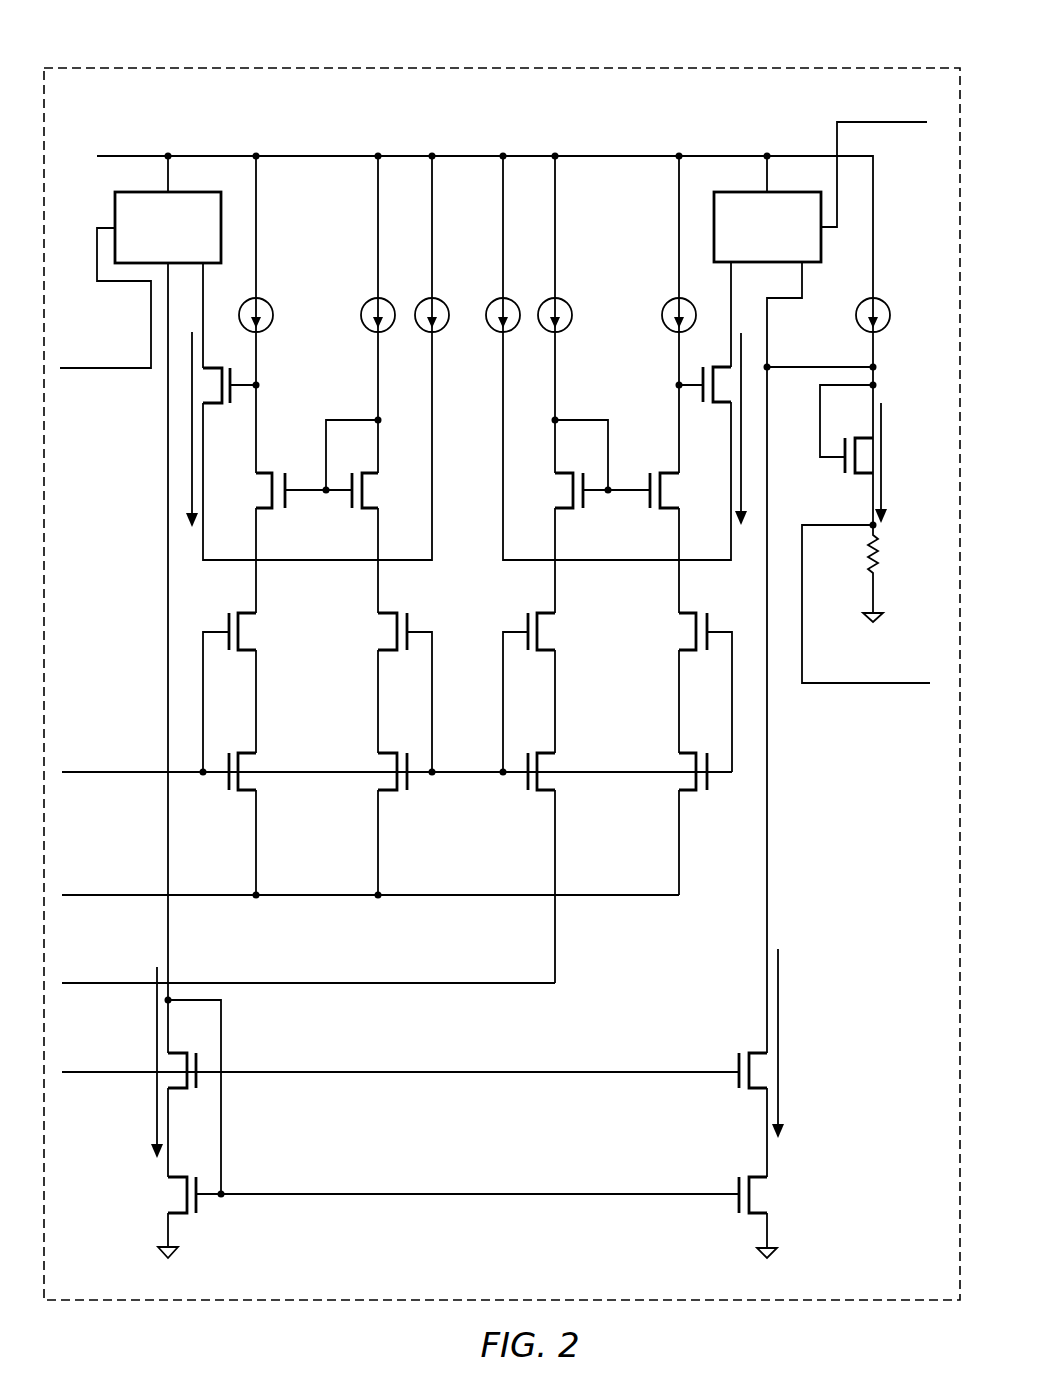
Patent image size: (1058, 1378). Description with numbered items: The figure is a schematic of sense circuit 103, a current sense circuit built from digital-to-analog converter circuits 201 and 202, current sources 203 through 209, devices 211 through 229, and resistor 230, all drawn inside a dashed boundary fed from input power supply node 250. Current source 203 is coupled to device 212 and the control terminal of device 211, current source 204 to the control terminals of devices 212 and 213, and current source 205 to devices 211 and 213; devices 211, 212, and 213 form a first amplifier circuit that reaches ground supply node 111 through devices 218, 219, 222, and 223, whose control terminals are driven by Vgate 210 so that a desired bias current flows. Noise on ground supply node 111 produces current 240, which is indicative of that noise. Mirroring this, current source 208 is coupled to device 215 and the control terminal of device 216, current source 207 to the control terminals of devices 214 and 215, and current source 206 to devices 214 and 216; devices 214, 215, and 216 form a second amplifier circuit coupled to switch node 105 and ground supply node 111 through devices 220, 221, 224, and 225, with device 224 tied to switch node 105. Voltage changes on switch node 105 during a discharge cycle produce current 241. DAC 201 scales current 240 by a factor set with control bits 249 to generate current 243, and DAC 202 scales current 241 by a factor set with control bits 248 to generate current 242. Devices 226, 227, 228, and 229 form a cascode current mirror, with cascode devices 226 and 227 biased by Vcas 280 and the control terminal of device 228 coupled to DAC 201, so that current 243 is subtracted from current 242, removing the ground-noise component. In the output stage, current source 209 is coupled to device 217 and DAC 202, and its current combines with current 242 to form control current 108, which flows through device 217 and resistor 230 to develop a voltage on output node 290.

The sense circuit 103 is at (290, 68).
The digital-to-analog converter circuit 201 is at (150, 248).
The digital-to-analog converter circuit 202 is at (749, 250).
The current source 203 is at (267, 302).
The current source 204 is at (367, 302).
The current source 205 is at (443, 302).
The current source 206 is at (487, 329).
The current source 207 is at (566, 302).
The current source 208 is at (666, 302).
The current source 209 is at (883, 302).
The device 211 is at (228, 405).
The device 212 is at (284, 471).
The device 213 is at (354, 510).
The device 214 is at (578, 510).
The device 215 is at (650, 472).
The device 216 is at (708, 404).
The device 217 is at (848, 475).
The device 218 is at (231, 652).
The device 219 is at (401, 652).
The device 220 is at (530, 652).
The device 221 is at (700, 652).
The device 222 is at (231, 792).
The device 223 is at (401, 792).
The device 224 is at (530, 792).
The device 225 is at (700, 792).
The device 226 is at (191, 1090).
The device 227 is at (744, 1090).
The device 228 is at (190, 1215).
The device 229 is at (744, 1215).
The resistor 230 is at (881, 557).
The current 240 is at (194, 496).
The current 241 is at (738, 494).
The current 242 is at (781, 1006).
The current 243 is at (154, 1121).
The control current 108 is at (884, 460).
The control bits 248 is at (874, 147).
The control bits 249 is at (105, 312).
The input power supply node 250 is at (485, 133).
The Vgate 210 is at (397, 775).
The ground supply node 111 is at (370, 871).
The switch node 105 is at (308, 972).
The Vcas 280 is at (400, 1074).
The output node 290 is at (866, 618).